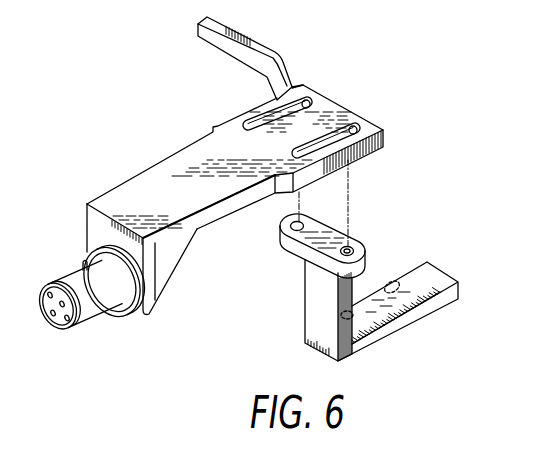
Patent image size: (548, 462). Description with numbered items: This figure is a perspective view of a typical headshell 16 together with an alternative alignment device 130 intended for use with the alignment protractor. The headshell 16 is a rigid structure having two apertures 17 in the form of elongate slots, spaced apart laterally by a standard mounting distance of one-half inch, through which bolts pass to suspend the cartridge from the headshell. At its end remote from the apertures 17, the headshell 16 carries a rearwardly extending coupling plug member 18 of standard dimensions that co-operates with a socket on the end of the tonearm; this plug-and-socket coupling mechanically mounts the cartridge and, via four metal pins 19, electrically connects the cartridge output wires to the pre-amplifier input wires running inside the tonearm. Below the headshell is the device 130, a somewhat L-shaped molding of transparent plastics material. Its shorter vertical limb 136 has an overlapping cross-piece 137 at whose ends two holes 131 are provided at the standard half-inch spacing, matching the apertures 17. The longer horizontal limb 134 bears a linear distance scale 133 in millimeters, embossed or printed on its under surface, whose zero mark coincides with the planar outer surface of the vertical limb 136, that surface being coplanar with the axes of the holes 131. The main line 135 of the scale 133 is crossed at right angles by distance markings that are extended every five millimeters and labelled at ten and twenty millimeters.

The headshell 16 is at (150, 163).
The apertures 17 is at (356, 126).
The coupling plug member 18 is at (98, 321).
The metal pins 19 is at (61, 307).
The device 130 is at (353, 281).
The holes 131 is at (345, 247).
The linear distance scale 133 is at (388, 275).
The horizontal limb 134 is at (441, 270).
The main line 135 is at (375, 333).
The vertical limb 136 is at (316, 326).
The cross-piece 137 is at (302, 254).